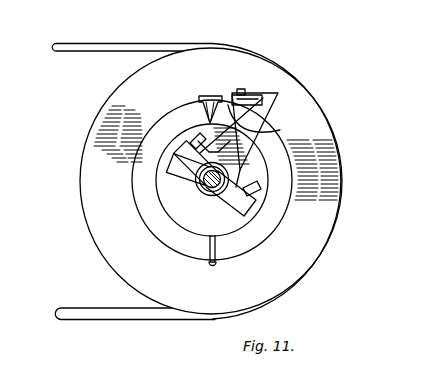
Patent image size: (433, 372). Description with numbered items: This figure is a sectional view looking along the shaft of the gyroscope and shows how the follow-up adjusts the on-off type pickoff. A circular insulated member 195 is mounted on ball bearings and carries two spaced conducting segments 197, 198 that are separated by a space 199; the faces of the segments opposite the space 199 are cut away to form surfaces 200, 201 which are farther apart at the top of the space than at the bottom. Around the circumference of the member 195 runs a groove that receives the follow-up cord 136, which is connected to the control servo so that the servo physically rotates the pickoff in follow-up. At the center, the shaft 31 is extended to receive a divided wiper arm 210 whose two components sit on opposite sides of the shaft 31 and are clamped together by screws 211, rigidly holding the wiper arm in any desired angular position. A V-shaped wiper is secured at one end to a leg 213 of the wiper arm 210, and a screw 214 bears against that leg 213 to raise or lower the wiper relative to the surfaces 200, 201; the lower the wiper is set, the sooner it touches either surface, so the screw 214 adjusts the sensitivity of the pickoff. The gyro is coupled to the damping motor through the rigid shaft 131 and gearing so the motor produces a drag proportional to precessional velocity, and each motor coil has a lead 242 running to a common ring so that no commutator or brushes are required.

The shaft 31 is at (202, 189).
The rigid shaft 131 is at (213, 183).
The follow-up cord 136 is at (148, 43).
The circular insulated member 195 is at (330, 182).
The segment 197 is at (168, 236).
The segment 198 is at (251, 235).
The space 199 is at (207, 117).
The surface 200 is at (203, 96).
The surface 201 is at (222, 91).
The divided wiper arm 210 is at (248, 157).
The screws 211 is at (183, 138).
The leg 213 is at (258, 109).
The screw 214 is at (245, 92).
The lead 242 is at (278, 130).